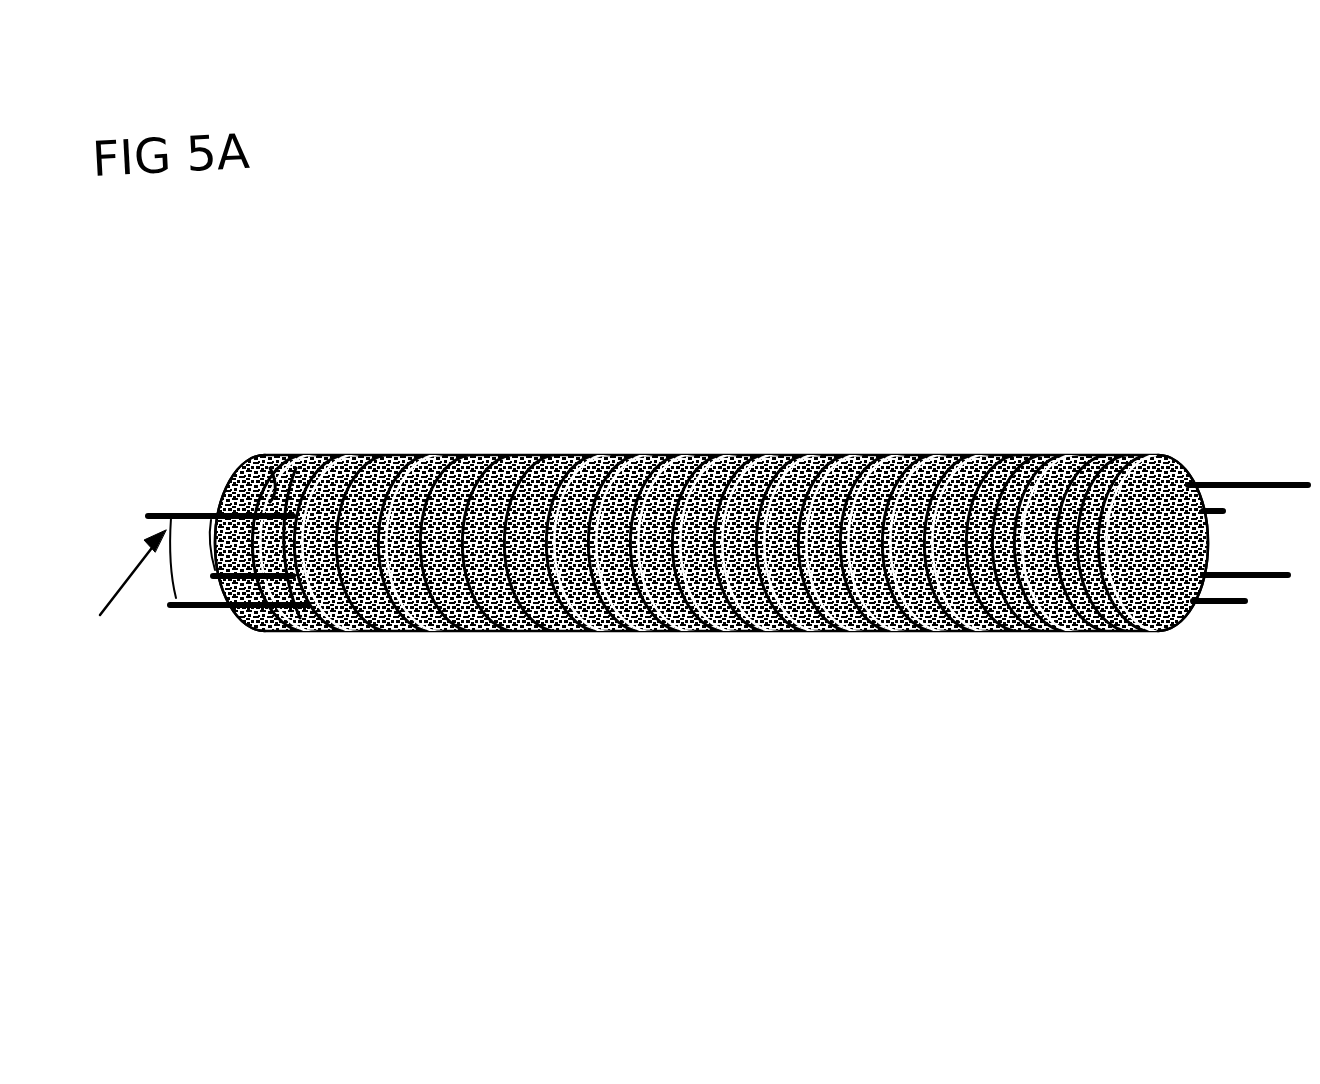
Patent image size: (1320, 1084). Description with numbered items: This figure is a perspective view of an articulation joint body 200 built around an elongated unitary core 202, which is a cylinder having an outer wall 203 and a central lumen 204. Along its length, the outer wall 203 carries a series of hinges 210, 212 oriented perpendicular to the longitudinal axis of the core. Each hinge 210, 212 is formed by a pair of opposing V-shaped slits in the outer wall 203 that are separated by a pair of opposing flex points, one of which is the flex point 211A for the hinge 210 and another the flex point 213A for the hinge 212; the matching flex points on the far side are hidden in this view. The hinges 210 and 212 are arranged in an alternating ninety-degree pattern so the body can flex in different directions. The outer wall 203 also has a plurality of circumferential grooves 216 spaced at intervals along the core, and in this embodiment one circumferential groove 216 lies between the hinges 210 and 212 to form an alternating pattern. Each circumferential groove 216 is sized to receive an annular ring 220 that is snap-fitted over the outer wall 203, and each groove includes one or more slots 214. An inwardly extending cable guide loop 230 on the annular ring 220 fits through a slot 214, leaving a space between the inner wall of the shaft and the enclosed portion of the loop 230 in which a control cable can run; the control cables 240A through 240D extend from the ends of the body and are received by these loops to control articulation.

The articulation joint body 200 is at (726, 379).
The unitary core 202 is at (810, 447).
The outer wall 203 is at (262, 624).
The central lumen 204 is at (205, 600).
The hinge 210 is at (1105, 623).
The flex point 211A is at (1112, 447).
The hinge 212 is at (1042, 447).
The flex point 213A is at (1018, 623).
The slot 214 is at (262, 494).
The circumferential groove 216 is at (322, 628).
The annular ring 220 is at (530, 622).
The cable guide loop 230 is at (268, 486).
The control cable 240A is at (225, 475).
The control cable 240D is at (212, 545).